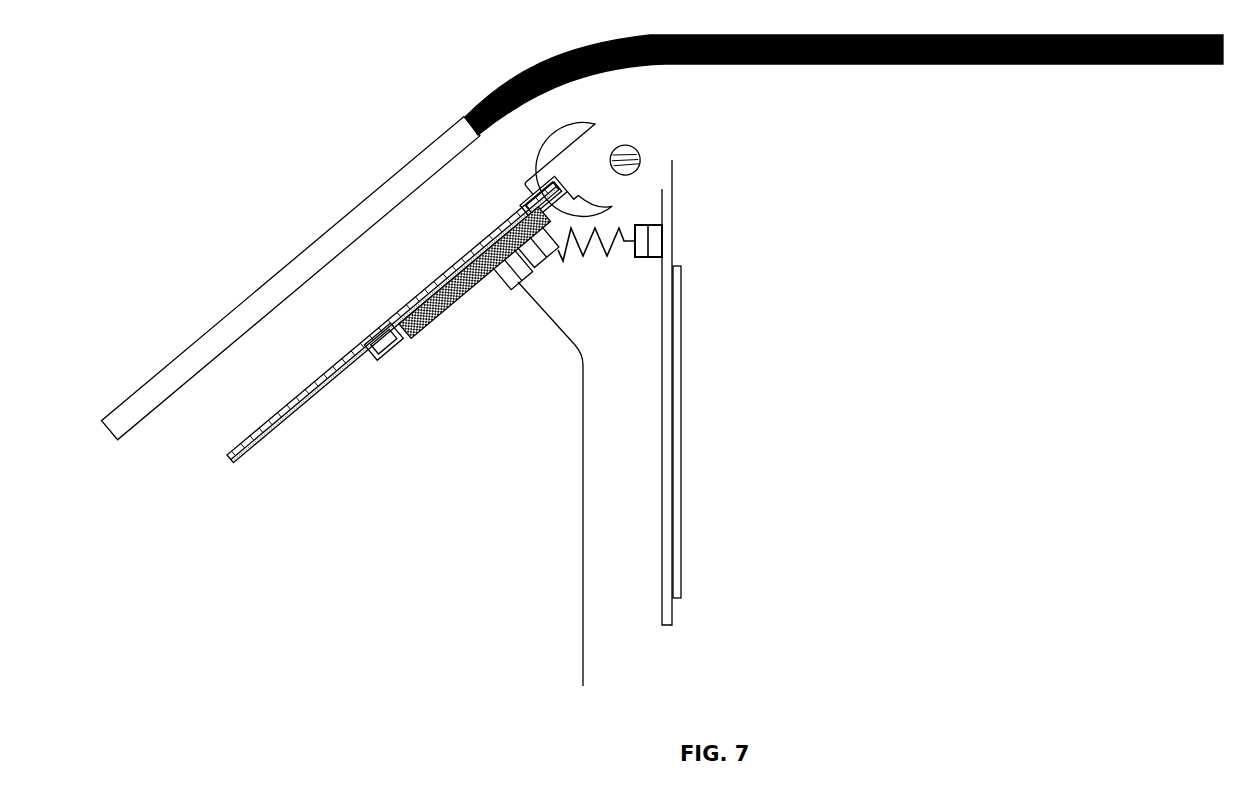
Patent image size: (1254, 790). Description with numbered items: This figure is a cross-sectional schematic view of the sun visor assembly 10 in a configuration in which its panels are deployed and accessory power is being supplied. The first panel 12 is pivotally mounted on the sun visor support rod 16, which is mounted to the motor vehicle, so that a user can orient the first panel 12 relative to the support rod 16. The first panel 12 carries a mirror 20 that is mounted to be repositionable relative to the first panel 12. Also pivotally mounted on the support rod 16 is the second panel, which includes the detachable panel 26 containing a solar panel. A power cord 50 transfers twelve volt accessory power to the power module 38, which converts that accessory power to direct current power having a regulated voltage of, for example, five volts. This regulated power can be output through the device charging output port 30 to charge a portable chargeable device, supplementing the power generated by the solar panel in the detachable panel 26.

The sun visor assembly 10 is at (837, 262).
The first panel 12 is at (672, 614).
The sun visor support rod 16 is at (630, 157).
The mirror 20 is at (683, 494).
The detachable panel 26 is at (308, 392).
The device charging output port 30 is at (392, 345).
The power module 38 is at (455, 305).
The power cord 50 is at (582, 520).